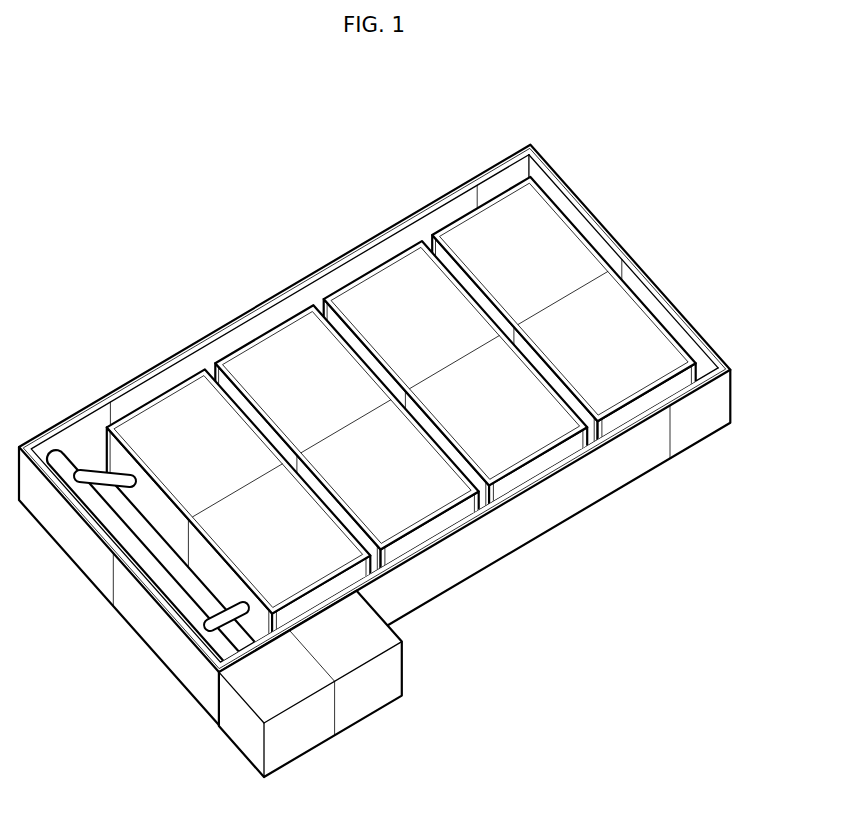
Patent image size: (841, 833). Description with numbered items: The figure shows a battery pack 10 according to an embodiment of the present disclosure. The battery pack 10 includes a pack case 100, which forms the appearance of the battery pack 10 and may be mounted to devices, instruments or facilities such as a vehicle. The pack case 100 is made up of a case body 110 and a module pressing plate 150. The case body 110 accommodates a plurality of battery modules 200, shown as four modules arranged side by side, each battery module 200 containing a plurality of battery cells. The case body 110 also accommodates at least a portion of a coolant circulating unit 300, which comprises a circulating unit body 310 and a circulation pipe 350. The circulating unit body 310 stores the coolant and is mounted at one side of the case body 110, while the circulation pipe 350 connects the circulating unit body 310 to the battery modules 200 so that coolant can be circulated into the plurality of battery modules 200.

The battery pack 10 is at (158, 177).
The pack case 100 is at (510, 106).
The case body 110 is at (512, 150).
The module pressing plate 150 is at (552, 170).
The battery module 200 is at (467, 233).
The coolant circulating unit 300 is at (108, 712).
The circulating unit body 310 is at (237, 733).
The circulation pipe 350 is at (207, 633).